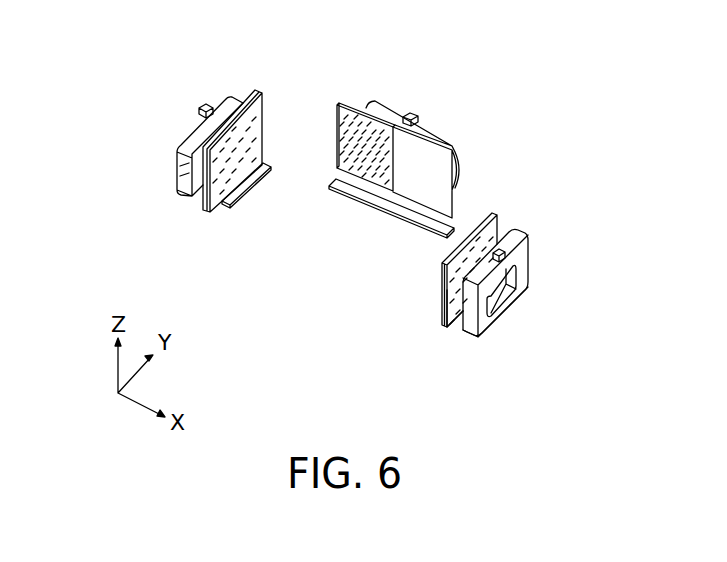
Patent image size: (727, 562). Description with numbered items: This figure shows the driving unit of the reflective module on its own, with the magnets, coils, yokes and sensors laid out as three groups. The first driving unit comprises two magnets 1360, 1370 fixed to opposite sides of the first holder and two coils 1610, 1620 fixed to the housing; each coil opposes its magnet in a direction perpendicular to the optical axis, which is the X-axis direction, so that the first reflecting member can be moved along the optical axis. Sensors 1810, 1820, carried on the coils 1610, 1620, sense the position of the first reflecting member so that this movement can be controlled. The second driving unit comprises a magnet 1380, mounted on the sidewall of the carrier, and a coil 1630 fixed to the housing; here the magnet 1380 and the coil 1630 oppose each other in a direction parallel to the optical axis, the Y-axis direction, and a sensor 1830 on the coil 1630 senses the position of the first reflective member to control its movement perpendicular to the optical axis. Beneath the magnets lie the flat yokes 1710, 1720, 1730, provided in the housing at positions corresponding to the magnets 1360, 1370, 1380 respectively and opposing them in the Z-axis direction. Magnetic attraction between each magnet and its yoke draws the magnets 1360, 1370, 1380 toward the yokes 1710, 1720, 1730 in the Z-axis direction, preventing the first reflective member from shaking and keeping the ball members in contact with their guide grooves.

The magnet 1360 is at (500, 204).
The magnet 1370 is at (252, 90).
The magnet 1380 is at (341, 98).
The coil 1610 is at (522, 257).
The coil 1620 is at (177, 170).
The coil 1630 is at (443, 133).
The yoke 1710 is at (455, 330).
The yoke 1720 is at (242, 204).
The yoke 1730 is at (391, 216).
The sensor 1810 is at (505, 260).
The sensor 1820 is at (203, 103).
The sensor 1830 is at (407, 110).